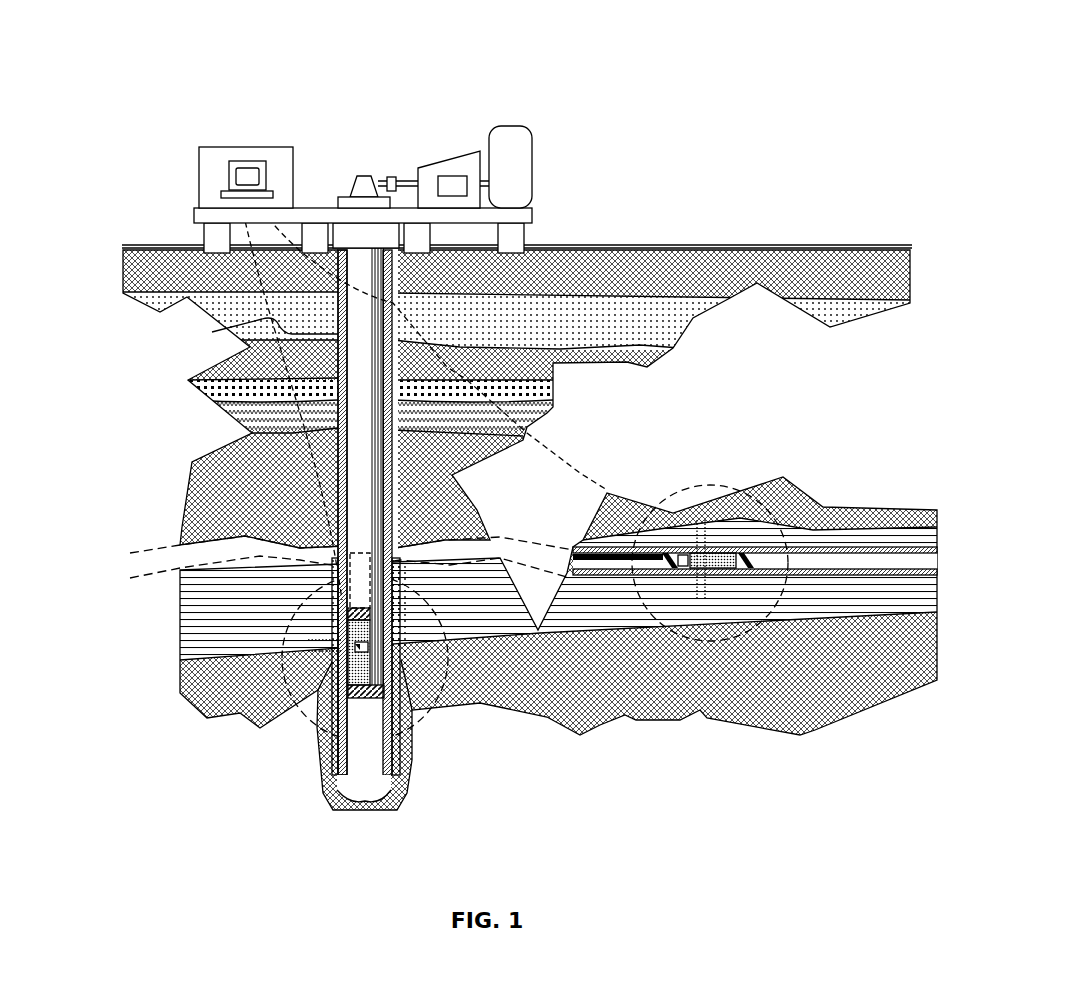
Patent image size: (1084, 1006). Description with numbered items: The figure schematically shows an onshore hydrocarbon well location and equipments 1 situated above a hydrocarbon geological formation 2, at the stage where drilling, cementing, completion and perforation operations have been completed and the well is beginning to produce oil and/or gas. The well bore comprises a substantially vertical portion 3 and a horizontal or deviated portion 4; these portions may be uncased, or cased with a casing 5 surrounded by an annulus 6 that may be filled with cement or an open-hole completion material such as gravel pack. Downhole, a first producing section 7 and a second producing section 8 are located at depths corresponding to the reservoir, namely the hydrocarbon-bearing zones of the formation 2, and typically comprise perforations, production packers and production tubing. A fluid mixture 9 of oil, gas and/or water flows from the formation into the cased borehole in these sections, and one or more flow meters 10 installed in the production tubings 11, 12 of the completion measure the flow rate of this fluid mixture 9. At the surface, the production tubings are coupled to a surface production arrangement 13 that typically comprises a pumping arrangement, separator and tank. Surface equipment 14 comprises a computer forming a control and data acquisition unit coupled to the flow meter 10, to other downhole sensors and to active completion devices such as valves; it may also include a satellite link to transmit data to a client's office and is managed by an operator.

The well location and equipments 1 is at (298, 90).
The hydrocarbon geological formation 2 is at (184, 461).
The substantially vertical portion 3 is at (342, 413).
The horizontal or deviated portion 4 is at (628, 582).
The casing 5 is at (256, 333).
The annulus 6 is at (343, 517).
The first producing section 7 is at (342, 653).
The second producing section 8 is at (710, 487).
The fluid mixture 9 is at (389, 610).
The flow meter 10 is at (352, 615).
The production tubing 11 is at (384, 597).
The production tubing 12 is at (575, 537).
The surface production arrangement 13 is at (455, 143).
The surface equipment 14 is at (200, 152).